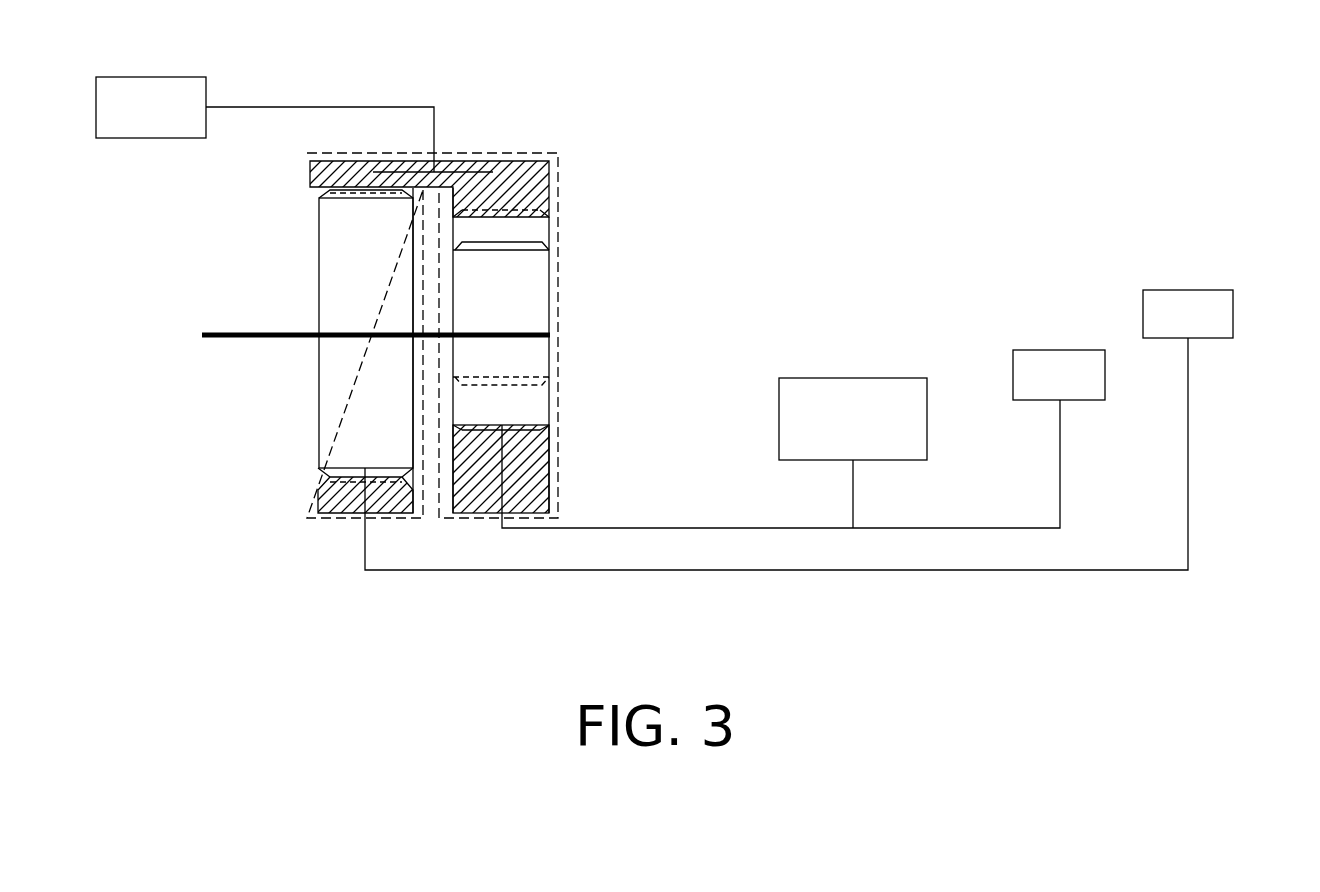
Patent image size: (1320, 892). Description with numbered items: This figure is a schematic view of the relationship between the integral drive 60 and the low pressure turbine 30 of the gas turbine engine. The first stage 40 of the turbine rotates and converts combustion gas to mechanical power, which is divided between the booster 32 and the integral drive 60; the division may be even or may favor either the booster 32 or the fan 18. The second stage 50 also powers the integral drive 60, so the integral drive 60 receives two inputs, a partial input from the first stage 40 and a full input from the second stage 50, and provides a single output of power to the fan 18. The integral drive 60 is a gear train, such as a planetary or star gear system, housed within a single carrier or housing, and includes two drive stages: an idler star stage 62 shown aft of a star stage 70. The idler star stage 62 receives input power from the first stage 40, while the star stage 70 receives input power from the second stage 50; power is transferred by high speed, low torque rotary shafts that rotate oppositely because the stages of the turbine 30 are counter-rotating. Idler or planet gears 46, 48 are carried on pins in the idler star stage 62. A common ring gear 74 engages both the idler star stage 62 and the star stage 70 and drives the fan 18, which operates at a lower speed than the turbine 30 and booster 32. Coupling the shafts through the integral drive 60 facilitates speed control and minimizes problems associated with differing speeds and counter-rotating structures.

The fan 18 is at (152, 77).
The low pressure turbine 30 is at (1182, 192).
The booster 32 is at (853, 378).
The first stage 40 is at (1060, 350).
The idler gear 46 is at (507, 237).
The idler gear 48 is at (503, 390).
The second stage 50 is at (1190, 290).
The integral drive 60 is at (553, 142).
The idler star stage 62 is at (555, 265).
The star stage 70 is at (307, 420).
The common ring gear 74 is at (361, 162).